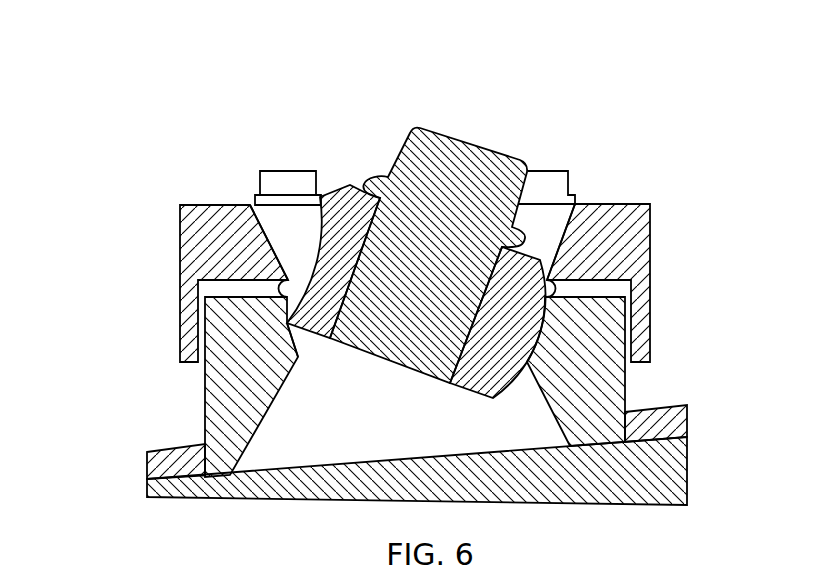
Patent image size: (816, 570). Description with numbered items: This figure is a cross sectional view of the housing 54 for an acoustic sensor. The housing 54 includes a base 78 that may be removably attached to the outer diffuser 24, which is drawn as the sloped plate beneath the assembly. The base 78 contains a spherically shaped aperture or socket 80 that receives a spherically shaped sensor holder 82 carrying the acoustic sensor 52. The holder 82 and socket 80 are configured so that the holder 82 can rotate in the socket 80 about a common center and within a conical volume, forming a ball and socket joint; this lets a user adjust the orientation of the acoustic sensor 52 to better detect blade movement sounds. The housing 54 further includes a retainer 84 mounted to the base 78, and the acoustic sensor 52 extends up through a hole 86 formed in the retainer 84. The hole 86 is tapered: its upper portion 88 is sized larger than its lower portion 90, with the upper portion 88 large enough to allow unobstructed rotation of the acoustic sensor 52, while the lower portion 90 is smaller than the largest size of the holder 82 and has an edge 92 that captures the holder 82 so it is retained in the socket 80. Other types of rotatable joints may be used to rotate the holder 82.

The outer diffuser 24 is at (160, 462).
The acoustic sensor 52 is at (497, 133).
The housing 54 is at (676, 138).
The base 78 is at (205, 402).
The socket 80 is at (378, 357).
The sensor holder 82 is at (520, 339).
The retainer 84 is at (182, 204).
The hole 86 is at (287, 224).
The upper portion 88 is at (263, 212).
The lower portion 90 is at (287, 250).
The edge 92 is at (274, 284).